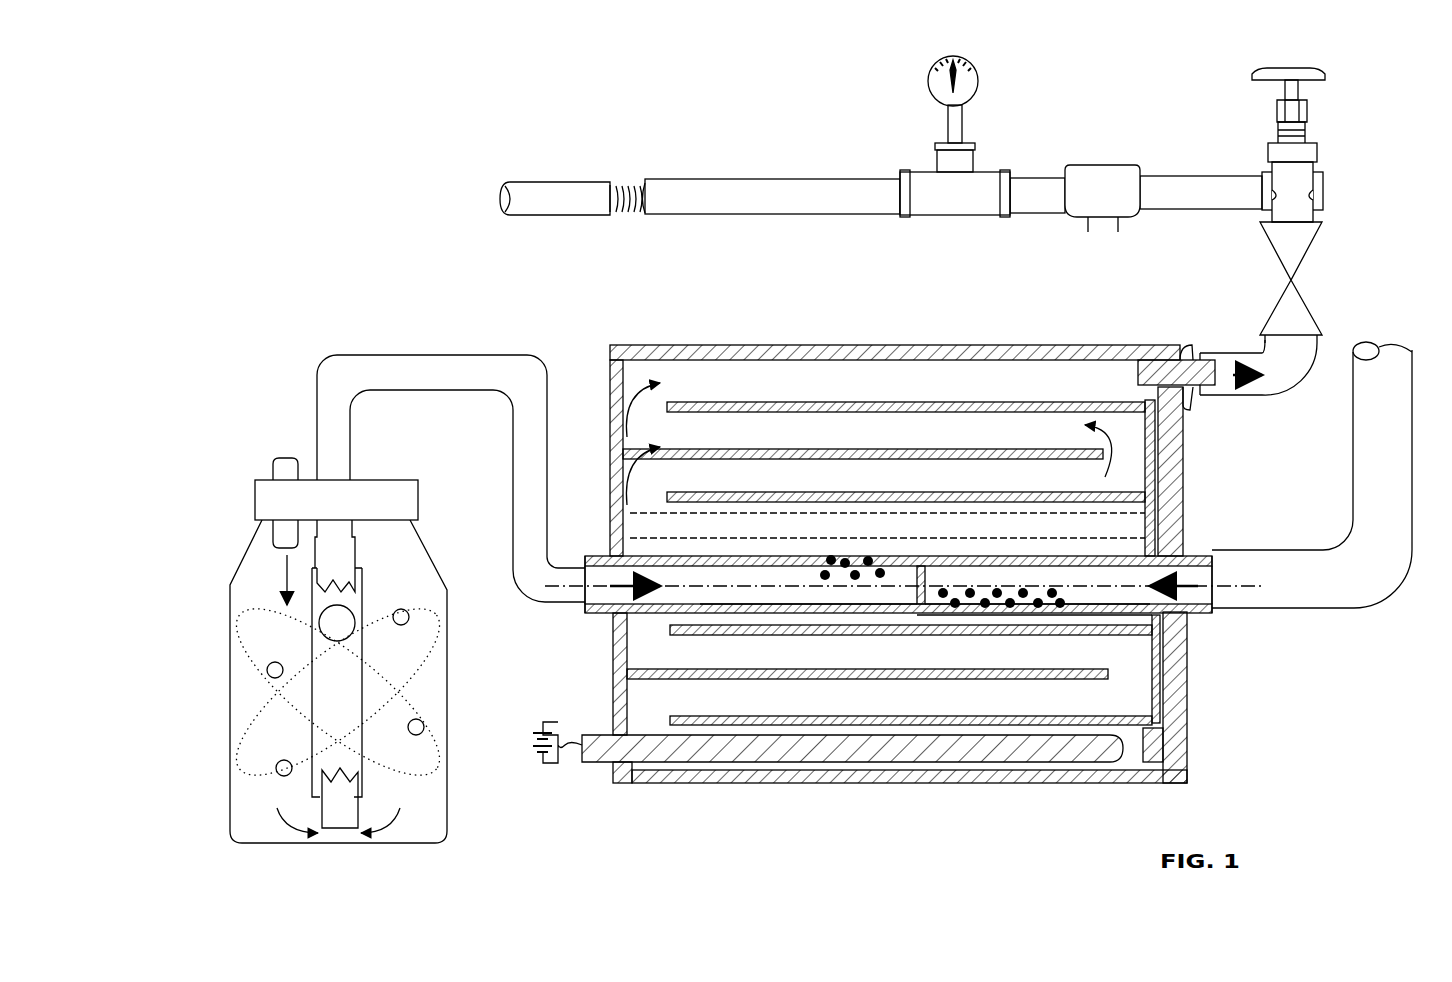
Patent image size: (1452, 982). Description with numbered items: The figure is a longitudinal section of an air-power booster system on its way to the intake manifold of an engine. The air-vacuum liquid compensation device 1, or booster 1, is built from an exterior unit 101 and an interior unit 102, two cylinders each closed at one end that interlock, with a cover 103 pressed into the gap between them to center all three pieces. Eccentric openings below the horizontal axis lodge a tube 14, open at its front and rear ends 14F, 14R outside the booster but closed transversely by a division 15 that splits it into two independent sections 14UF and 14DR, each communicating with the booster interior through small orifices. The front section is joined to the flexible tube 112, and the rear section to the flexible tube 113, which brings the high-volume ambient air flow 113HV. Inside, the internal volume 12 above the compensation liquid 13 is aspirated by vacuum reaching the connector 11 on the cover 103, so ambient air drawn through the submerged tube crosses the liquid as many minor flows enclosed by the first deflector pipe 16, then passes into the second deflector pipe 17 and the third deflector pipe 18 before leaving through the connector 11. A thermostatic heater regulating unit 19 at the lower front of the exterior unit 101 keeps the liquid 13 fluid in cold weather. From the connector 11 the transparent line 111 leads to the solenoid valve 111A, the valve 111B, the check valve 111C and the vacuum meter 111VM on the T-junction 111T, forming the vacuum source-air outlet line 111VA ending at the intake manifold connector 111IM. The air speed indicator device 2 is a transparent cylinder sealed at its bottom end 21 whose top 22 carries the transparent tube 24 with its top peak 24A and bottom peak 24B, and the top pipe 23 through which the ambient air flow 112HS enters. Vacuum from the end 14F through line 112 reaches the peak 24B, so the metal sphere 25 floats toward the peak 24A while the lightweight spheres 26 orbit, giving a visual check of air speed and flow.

The air-vacuum liquid compensation device 1 is at (1047, 340).
The air speed indicator device 2 is at (403, 474).
The connector 11 is at (1196, 350).
The internal volume 12 is at (817, 527).
The compensation liquid 13 is at (650, 550).
The tube 14 is at (589, 555).
The front end of tube 14F is at (584, 590).
The rear end of tube 14R is at (1213, 590).
The front tubular section with openings 14UF is at (808, 572).
The rear tubular section with openings 14DR is at (945, 612).
The transverse division 15 is at (920, 590).
The first deflector pipe 16 is at (713, 492).
The second deflector pipe 17 is at (632, 448).
The third deflector pipe 18 is at (700, 403).
The thermostatic heater regulating unit 19 is at (598, 762).
The bottom end of transparent cylinder 21 is at (345, 845).
The top of transparent cylinder 22 is at (418, 487).
The top pipe 23 is at (278, 473).
The transparent tube 24 is at (352, 475).
The top peak 24A is at (345, 568).
The bottom peak 24B is at (350, 805).
The metal sphere 25 is at (355, 605).
The lightweight spheres 26 is at (268, 665).
The exterior unit 101 is at (610, 358).
The interior unit 102 is at (1155, 463).
The cover 103 is at (1190, 757).
The air-vacuum line 111 is at (718, 193).
The solenoid valve 111A is at (1108, 165).
The valve 111B is at (1318, 152).
The check valve 111C is at (1315, 240).
The T-junction 111T is at (955, 215).
The vacuum meter 111VM is at (980, 84).
The vacuum source-air outlet line 111VA is at (365, 204).
The intake manifold connector 111IM is at (541, 180).
The flexible tube 112 is at (446, 372).
The ambient air flow 112HS is at (285, 445).
The flexible tube 113 is at (1390, 560).
The high-volume ambient air flow 113HV is at (1380, 332).